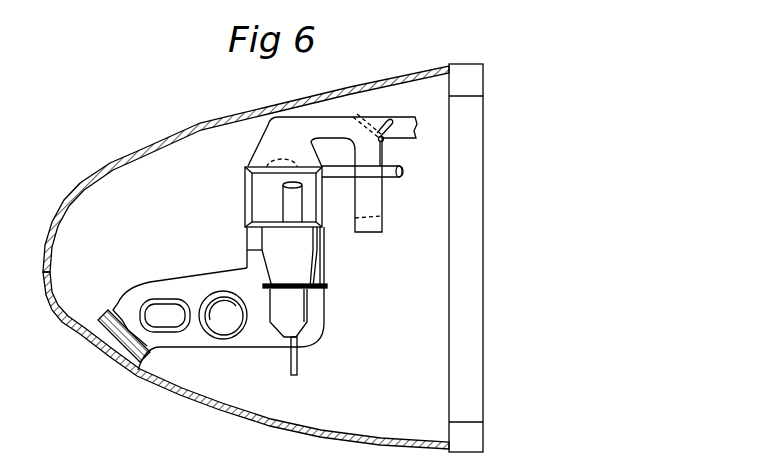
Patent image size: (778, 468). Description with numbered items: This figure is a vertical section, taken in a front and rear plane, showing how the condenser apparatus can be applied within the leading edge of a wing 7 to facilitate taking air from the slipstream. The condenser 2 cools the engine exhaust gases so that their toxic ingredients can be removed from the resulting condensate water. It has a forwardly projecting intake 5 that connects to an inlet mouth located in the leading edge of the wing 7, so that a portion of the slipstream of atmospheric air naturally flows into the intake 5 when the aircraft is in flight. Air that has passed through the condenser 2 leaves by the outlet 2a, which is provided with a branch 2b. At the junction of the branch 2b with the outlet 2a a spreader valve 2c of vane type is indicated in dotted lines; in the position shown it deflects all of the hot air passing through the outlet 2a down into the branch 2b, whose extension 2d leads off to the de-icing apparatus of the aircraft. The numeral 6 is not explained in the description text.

The wing 7 is at (203, 126).
The lower hull plate 6 is at (118, 352).
The intake 5 is at (174, 282).
The condenser 2 is at (320, 208).
The outlet 2a is at (292, 128).
The branch 2b is at (376, 157).
The spreader valve 2c is at (368, 113).
The extension 2d is at (372, 217).